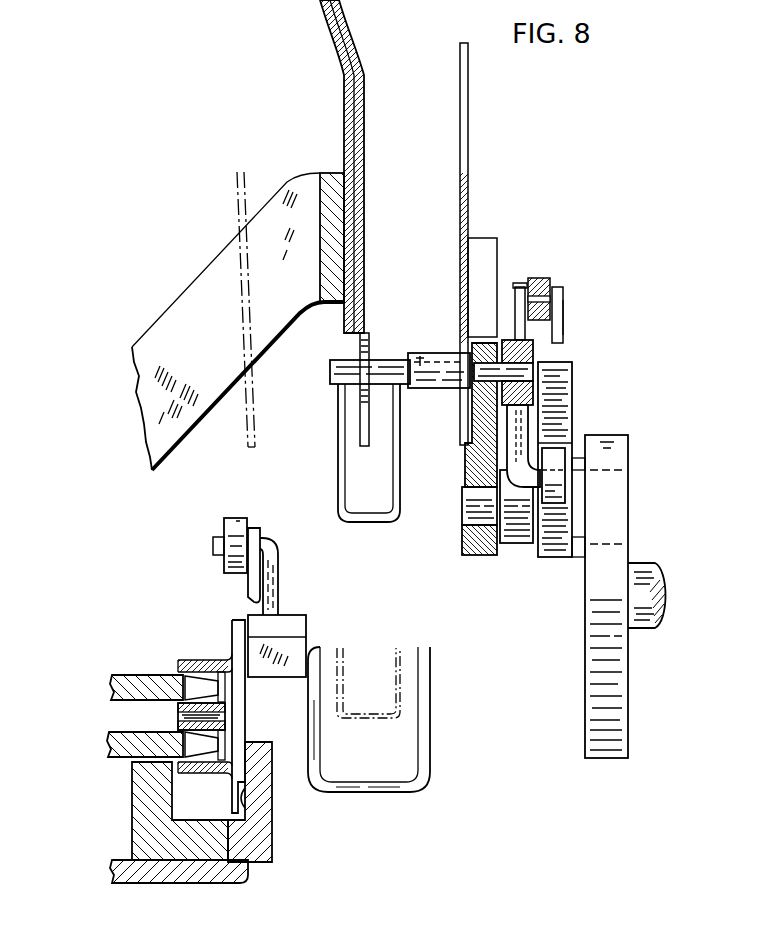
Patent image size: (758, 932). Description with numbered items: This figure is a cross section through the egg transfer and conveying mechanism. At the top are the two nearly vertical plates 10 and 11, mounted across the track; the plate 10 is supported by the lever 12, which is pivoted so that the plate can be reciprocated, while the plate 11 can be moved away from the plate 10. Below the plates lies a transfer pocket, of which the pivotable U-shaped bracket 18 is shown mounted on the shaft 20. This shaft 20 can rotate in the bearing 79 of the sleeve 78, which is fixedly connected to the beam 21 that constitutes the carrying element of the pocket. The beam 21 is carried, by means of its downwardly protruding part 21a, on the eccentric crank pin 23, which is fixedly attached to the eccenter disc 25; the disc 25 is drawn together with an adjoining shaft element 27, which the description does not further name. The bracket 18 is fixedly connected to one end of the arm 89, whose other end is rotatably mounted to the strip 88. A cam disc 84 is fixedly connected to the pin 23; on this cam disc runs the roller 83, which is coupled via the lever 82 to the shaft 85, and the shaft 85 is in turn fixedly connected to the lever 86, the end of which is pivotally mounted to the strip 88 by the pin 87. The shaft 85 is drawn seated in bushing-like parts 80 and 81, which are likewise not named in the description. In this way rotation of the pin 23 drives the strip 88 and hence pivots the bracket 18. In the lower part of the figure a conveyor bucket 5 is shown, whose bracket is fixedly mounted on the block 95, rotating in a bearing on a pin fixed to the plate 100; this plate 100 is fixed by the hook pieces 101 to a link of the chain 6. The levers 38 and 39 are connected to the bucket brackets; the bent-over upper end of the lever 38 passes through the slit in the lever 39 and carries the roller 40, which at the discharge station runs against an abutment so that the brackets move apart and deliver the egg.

The conveyor bucket 5 is at (375, 766).
The chain 6 is at (178, 717).
The plate 10 is at (460, 176).
The plate 11 is at (352, 32).
The lever 12 is at (193, 278).
The U-shaped bracket 18 is at (373, 522).
The shaft 20 is at (330, 380).
The beam 21 is at (472, 425).
The downwardly protruding part 21a is at (469, 555).
The crank pin 23 is at (462, 512).
The eccenter disc 25 is at (585, 719).
The drive shaft 27 is at (653, 628).
The lever 38 is at (279, 583).
The lever 39 is at (259, 531).
The roller 40 is at (236, 518).
The sleeve 78 is at (440, 353).
The bearing 79 is at (418, 360).
The bushing 80 is at (535, 350).
The bushing 81 is at (533, 403).
The lever 82 is at (526, 488).
The roller 83 is at (561, 448).
The cam disc 84 is at (557, 557).
The shaft 85 is at (534, 384).
The lever 86 is at (518, 287).
The pin 87 is at (558, 287).
The strip 88 is at (540, 278).
The arm 89 is at (566, 320).
The block 95 is at (282, 677).
The plate 100 is at (245, 723).
The hook piece 101 is at (232, 629).